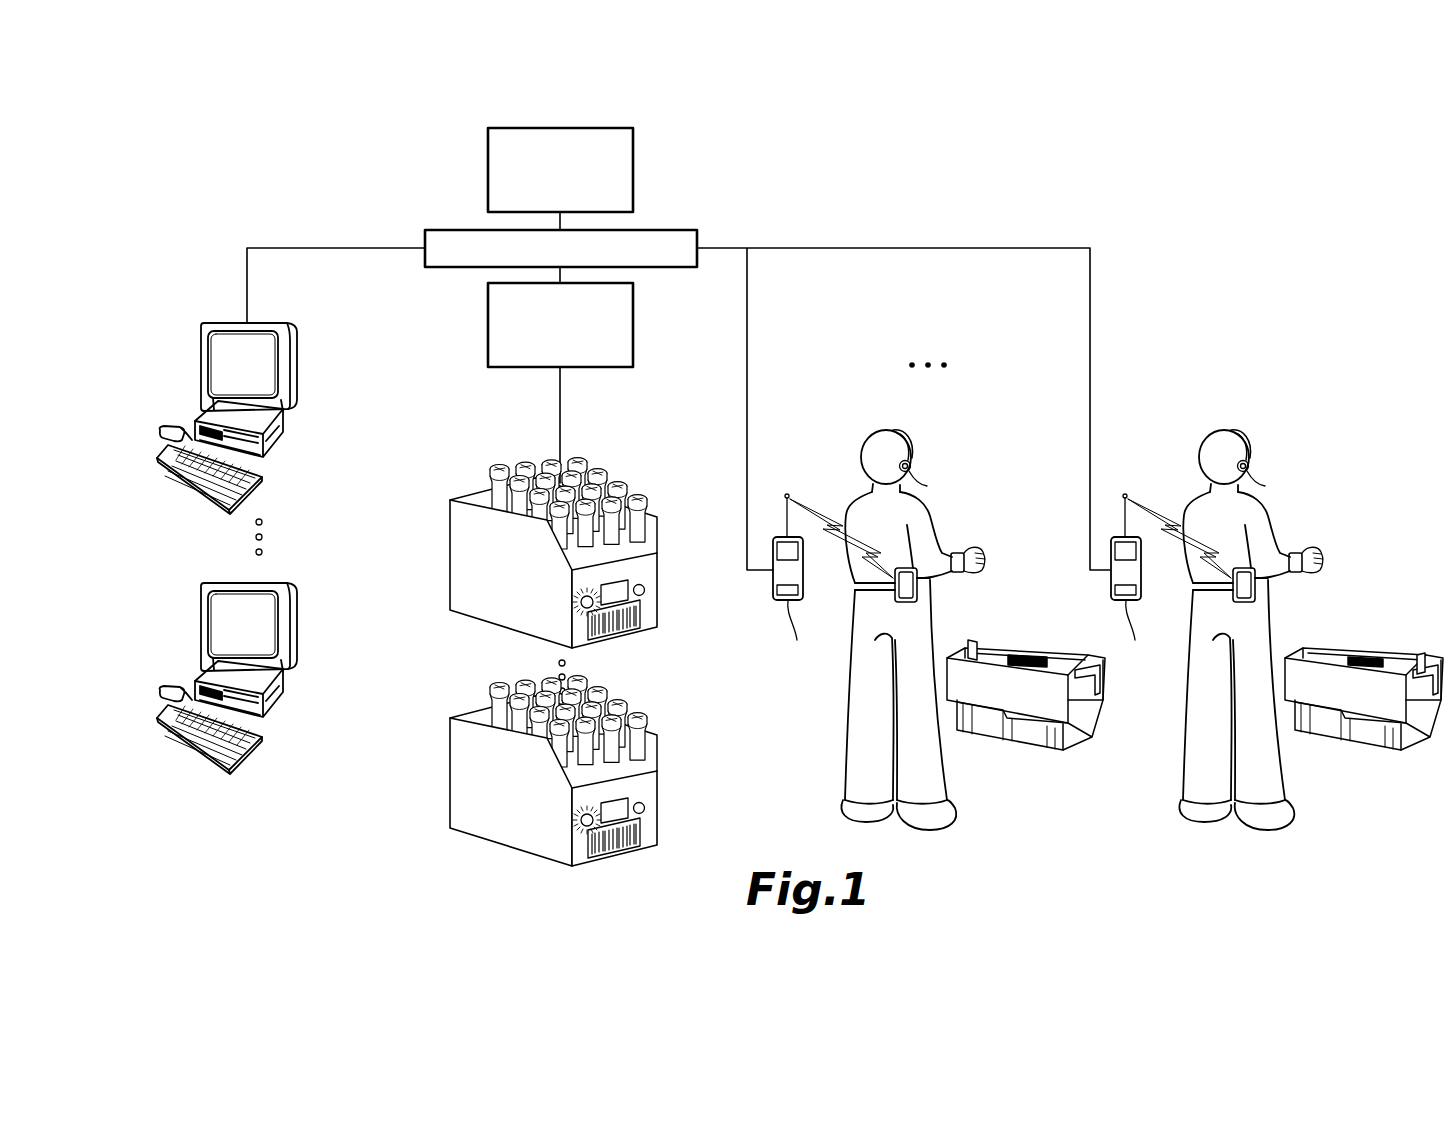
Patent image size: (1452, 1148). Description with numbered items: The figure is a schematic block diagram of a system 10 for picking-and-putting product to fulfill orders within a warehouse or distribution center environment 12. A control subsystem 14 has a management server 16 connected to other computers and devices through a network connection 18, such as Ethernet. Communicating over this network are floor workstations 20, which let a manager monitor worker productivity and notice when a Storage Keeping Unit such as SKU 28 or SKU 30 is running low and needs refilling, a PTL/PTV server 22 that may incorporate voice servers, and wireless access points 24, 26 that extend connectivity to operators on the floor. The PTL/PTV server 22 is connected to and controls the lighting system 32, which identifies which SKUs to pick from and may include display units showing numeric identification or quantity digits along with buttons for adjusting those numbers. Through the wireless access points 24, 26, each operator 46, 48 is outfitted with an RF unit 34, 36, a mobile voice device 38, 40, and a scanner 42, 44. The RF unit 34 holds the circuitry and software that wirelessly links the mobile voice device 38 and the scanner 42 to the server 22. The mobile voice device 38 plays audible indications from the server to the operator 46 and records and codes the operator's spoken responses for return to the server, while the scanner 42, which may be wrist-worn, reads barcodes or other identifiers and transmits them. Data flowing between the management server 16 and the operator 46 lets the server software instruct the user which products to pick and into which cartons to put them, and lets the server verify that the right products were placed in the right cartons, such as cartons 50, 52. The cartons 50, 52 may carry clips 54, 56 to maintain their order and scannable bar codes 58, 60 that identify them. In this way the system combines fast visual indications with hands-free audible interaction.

The system 10 is at (825, 161).
The warehouse or distribution center environment 12 is at (1128, 796).
The control subsystem 14 is at (350, 216).
The management server 16 is at (634, 166).
The network connection 18 is at (450, 228).
The floor workstation 20 is at (298, 371).
The PTL/PTV server 22 is at (634, 325).
The wireless access point 24 is at (833, 580).
The wireless access point 26 is at (1171, 580).
The SKU 28 is at (526, 570).
The SKU 30 is at (526, 788).
The lighting system 32 is at (581, 606).
The RF unit 34 is at (913, 592).
The RF unit 36 is at (1277, 591).
The mobile voice device 38 is at (911, 466).
The mobile voice device 40 is at (1275, 458).
The scanner 42 is at (985, 566).
The scanner 44 is at (1330, 567).
The operator 46 is at (908, 630).
The operator 48 is at (1246, 630).
The carton 50 is at (1026, 700).
The carton 52 is at (1364, 700).
The clip 54 is at (977, 645).
The clip 56 is at (1411, 634).
The scannable bar code 58 is at (1030, 655).
The scannable bar code 60 is at (1369, 631).